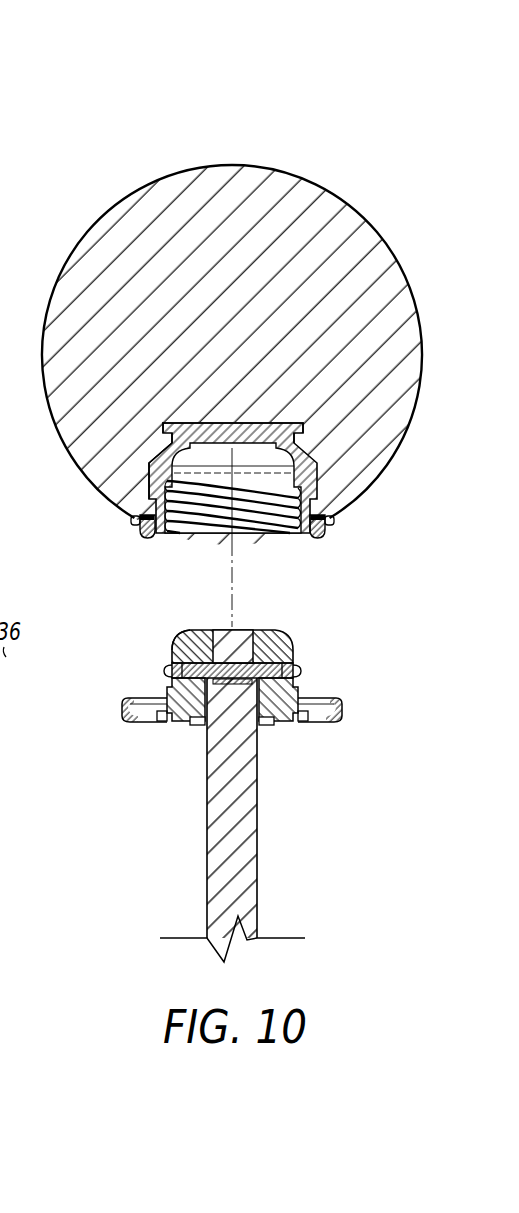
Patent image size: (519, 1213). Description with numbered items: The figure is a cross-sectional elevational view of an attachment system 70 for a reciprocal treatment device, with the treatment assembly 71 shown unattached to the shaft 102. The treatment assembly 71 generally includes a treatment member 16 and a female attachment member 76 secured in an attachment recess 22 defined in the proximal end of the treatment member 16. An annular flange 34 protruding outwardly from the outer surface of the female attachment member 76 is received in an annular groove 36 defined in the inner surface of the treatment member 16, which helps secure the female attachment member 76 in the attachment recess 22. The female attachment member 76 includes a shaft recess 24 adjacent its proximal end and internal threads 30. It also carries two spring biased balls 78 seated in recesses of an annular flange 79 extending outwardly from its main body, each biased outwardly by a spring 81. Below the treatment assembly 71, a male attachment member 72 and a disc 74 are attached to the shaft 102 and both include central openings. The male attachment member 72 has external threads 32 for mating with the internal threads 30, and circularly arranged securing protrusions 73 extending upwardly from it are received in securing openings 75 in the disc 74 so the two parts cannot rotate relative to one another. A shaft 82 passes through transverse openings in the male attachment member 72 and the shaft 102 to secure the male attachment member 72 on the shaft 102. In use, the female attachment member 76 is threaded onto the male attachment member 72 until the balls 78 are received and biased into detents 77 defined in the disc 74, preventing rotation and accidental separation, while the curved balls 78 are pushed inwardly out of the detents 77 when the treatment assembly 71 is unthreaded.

The treatment member 16 is at (233, 195).
The treatment assembly 71 is at (243, 343).
The attachment recess 22 is at (316, 462).
The shaft recess 24 is at (278, 480).
The annular flange 34 is at (302, 432).
The annular groove 36 is at (300, 442).
The female attachment member 76 is at (160, 462).
The internal threads 30 is at (167, 488).
The spring biased balls 78 is at (147, 540).
The spring 81 is at (314, 513).
The annular flange 79 is at (334, 519).
The attachment system 70 is at (254, 781).
The male attachment member 72 is at (275, 644).
The shaft 102 is at (237, 887).
The external threads 32 is at (300, 690).
The securing protrusions 73 is at (178, 730).
The securing openings 75 is at (165, 727).
The disc 74 is at (343, 712).
The detents 77 is at (318, 727).
The shaft 82 is at (190, 662).